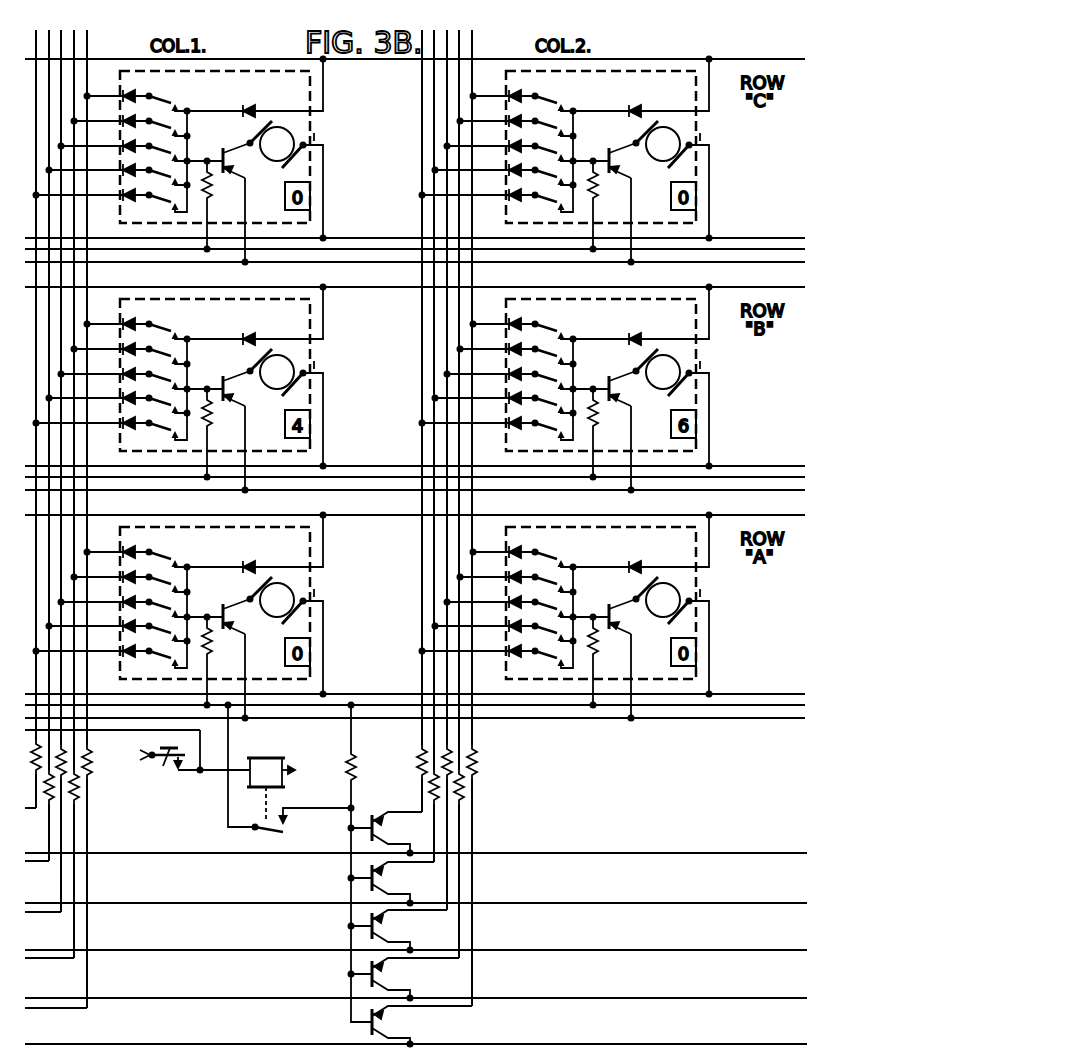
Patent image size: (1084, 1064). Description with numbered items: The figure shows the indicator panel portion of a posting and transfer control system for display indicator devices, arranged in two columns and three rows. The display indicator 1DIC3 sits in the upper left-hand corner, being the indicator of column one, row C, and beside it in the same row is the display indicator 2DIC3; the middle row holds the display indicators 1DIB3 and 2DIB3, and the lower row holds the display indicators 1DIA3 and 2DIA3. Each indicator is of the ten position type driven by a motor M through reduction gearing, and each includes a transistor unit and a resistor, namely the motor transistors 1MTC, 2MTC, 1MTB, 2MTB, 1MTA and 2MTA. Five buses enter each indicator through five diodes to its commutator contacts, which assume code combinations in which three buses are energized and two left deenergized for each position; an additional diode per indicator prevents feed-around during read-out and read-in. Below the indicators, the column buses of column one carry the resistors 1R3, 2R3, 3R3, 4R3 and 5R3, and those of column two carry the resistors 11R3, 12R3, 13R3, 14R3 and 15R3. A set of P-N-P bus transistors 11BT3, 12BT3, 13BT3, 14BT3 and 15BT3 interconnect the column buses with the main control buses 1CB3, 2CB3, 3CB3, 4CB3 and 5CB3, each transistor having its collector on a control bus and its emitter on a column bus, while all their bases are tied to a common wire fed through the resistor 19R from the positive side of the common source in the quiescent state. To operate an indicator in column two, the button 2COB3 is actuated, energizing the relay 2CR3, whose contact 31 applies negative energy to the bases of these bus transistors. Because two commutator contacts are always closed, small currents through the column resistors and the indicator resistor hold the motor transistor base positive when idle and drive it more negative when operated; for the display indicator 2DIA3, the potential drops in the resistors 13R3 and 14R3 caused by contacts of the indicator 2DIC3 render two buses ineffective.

The resistor 19R is at (341, 862).
The motor transistor 1MTC is at (249, 149).
The motor transistor 2MTC is at (635, 149).
The motor transistor 1MTB is at (249, 377).
The motor transistor 2MTB is at (635, 377).
The motor transistor 1MTA is at (249, 605).
The motor transistor 2MTA is at (635, 605).
The display indicator 1DIC3 is at (334, 183).
The display indicator 2DIC3 is at (720, 183).
The display indicator 1DIB3 is at (333, 411).
The display indicator 2DIB3 is at (719, 411).
The display indicator 1DIA3 is at (333, 639).
The display indicator 2DIA3 is at (719, 639).
The resistor 1R3 is at (87, 760).
The resistor 2R3 is at (75, 790).
The resistor 3R3 is at (62, 752).
The resistor 4R3 is at (50, 793).
The resistor 5R3 is at (37, 768).
The resistor 11R3 is at (473, 758).
The resistor 12R3 is at (461, 797).
The resistor 13R3 is at (447, 753).
The resistor 14R3 is at (435, 785).
The resistor 15R3 is at (423, 762).
The button 2COB3 is at (156, 769).
The relay 2CR3 is at (266, 764).
The contact 31 is at (296, 817).
The bus transistor 11BT3 is at (422, 1027).
The bus transistor 12BT3 is at (405, 980).
The bus transistor 13BT3 is at (399, 932).
The bus transistor 14BT3 is at (392, 884).
The bus transistor 15BT3 is at (392, 834).
The main control bus 1CB3 is at (732, 1044).
The main control bus 2CB3 is at (732, 998).
The main control bus 3CB3 is at (732, 950).
The main control bus 4CB3 is at (732, 903).
The main control bus 5CB3 is at (732, 853).